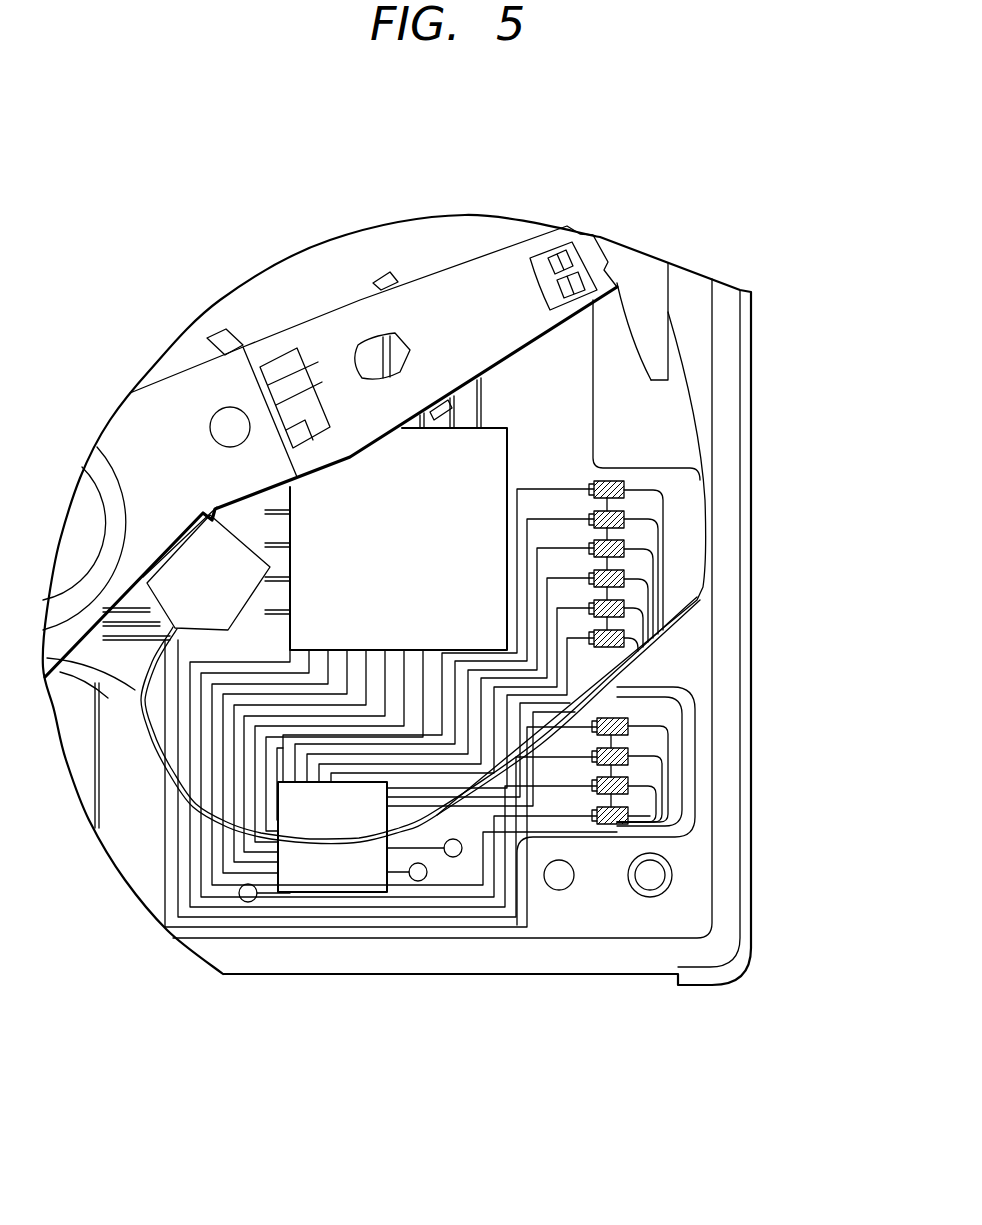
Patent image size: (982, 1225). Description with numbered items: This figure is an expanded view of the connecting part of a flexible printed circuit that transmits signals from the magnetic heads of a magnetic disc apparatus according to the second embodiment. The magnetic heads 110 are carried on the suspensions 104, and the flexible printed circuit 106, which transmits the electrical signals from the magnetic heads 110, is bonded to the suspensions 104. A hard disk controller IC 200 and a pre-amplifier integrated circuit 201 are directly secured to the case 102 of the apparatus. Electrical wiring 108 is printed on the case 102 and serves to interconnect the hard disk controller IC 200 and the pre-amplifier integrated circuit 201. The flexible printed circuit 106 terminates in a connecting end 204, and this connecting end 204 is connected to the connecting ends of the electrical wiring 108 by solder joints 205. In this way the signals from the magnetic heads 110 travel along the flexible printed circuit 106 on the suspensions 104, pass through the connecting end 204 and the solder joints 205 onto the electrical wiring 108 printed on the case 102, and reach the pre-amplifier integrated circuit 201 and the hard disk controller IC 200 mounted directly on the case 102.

The case 102 is at (752, 643).
The suspensions 104 is at (460, 275).
The flexible printed circuit 106 is at (193, 807).
The electrical wiring 108 is at (557, 815).
The magnetic heads 110 is at (578, 252).
The hard disk controller IC 200 is at (510, 447).
The pre-amplifier integrated circuit 201 is at (348, 893).
The connecting end 204 is at (663, 503).
The solder joints 205 is at (630, 806).